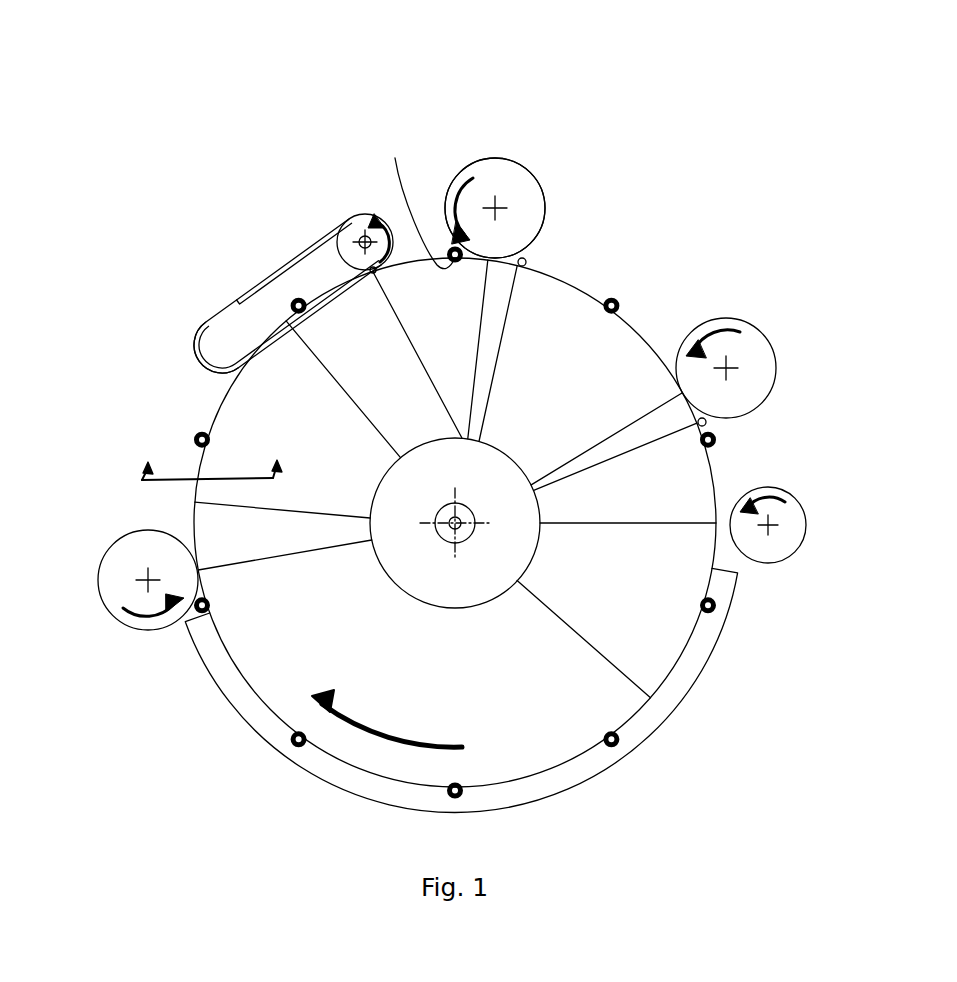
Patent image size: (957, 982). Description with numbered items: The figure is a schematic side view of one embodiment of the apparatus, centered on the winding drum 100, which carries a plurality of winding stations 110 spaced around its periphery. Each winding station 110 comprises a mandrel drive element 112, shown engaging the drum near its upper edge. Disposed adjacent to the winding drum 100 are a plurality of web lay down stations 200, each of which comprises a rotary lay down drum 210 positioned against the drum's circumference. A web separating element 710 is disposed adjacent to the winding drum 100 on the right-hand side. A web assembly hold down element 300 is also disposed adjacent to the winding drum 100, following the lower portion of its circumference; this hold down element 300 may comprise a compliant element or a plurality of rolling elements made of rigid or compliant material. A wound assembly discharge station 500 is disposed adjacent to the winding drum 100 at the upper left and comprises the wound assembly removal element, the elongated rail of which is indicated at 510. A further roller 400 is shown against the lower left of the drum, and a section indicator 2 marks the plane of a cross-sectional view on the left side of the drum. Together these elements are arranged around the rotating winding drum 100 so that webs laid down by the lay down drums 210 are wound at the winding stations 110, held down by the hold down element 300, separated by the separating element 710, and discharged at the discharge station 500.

The winding drum 100 is at (558, 312).
The winding station 110 is at (617, 300).
The mandrel drive element 112 is at (403, 193).
The web lay down station 200 is at (531, 130).
The rotary lay down drum 210 is at (536, 170).
The web assembly hold down element 300 is at (698, 680).
The roller 400 is at (102, 603).
The wound assembly discharge station 500 is at (282, 213).
The rail end 510 is at (213, 312).
The web separating element 710 is at (797, 490).
The section line 2 is at (211, 456).